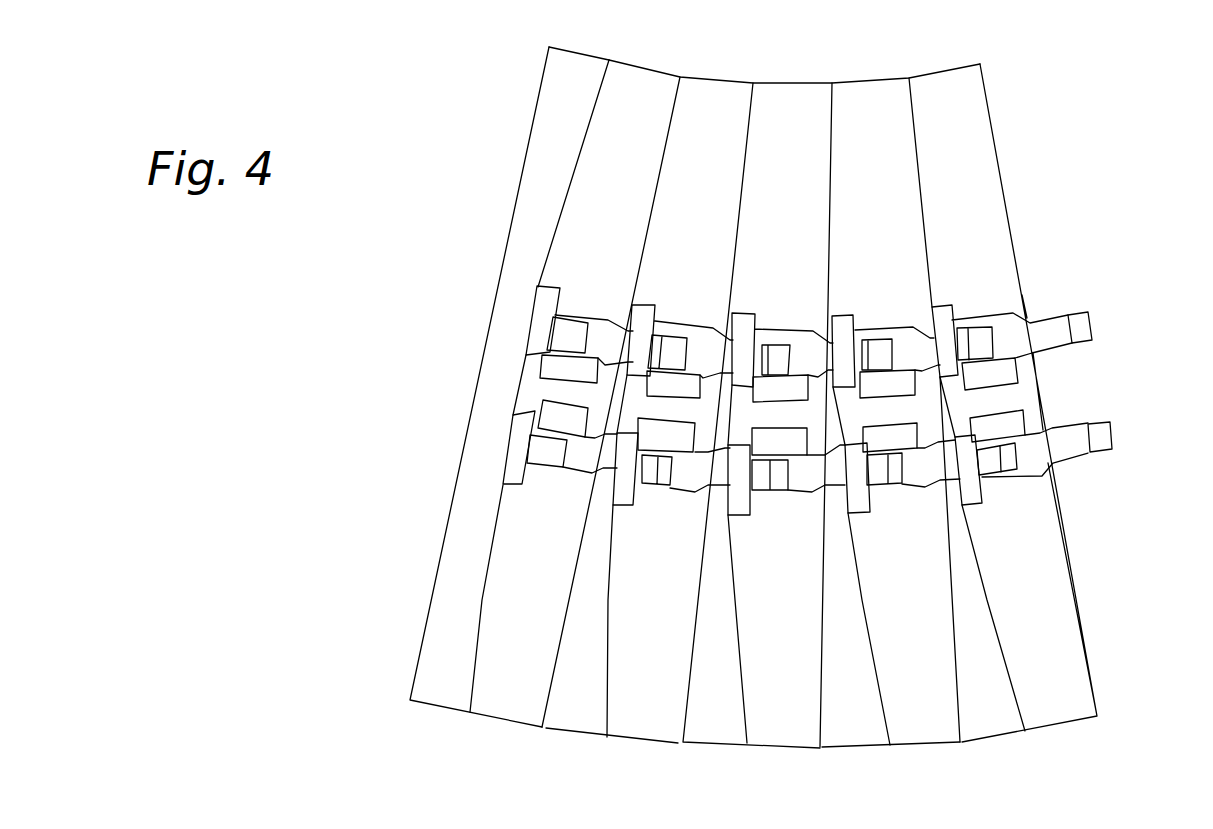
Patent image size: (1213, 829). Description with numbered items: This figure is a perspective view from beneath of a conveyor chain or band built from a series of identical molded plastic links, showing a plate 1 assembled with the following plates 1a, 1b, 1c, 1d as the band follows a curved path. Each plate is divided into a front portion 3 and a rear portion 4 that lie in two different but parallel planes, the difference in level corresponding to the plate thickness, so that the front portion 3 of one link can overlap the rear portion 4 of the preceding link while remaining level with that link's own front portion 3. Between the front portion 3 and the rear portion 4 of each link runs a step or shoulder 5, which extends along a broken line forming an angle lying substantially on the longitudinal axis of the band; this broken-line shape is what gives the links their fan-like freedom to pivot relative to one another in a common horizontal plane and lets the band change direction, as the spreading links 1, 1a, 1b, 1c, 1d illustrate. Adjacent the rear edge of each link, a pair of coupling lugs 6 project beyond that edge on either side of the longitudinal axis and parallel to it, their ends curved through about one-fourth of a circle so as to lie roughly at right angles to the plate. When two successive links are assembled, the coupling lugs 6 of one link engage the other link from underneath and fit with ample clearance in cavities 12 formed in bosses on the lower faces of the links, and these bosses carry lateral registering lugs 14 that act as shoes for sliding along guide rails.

The plate 1 is at (516, 713).
The plate 1a is at (644, 735).
The plate 1b is at (785, 748).
The plate 1c is at (927, 746).
The plate 1d is at (1053, 721).
The front portion 3 is at (572, 100).
The rear portion 4 is at (630, 98).
The step or shoulder 5 is at (575, 163).
The coupling lugs 6 is at (770, 352).
The cavities 12 is at (800, 328).
The lateral registering lugs 14 is at (562, 403).